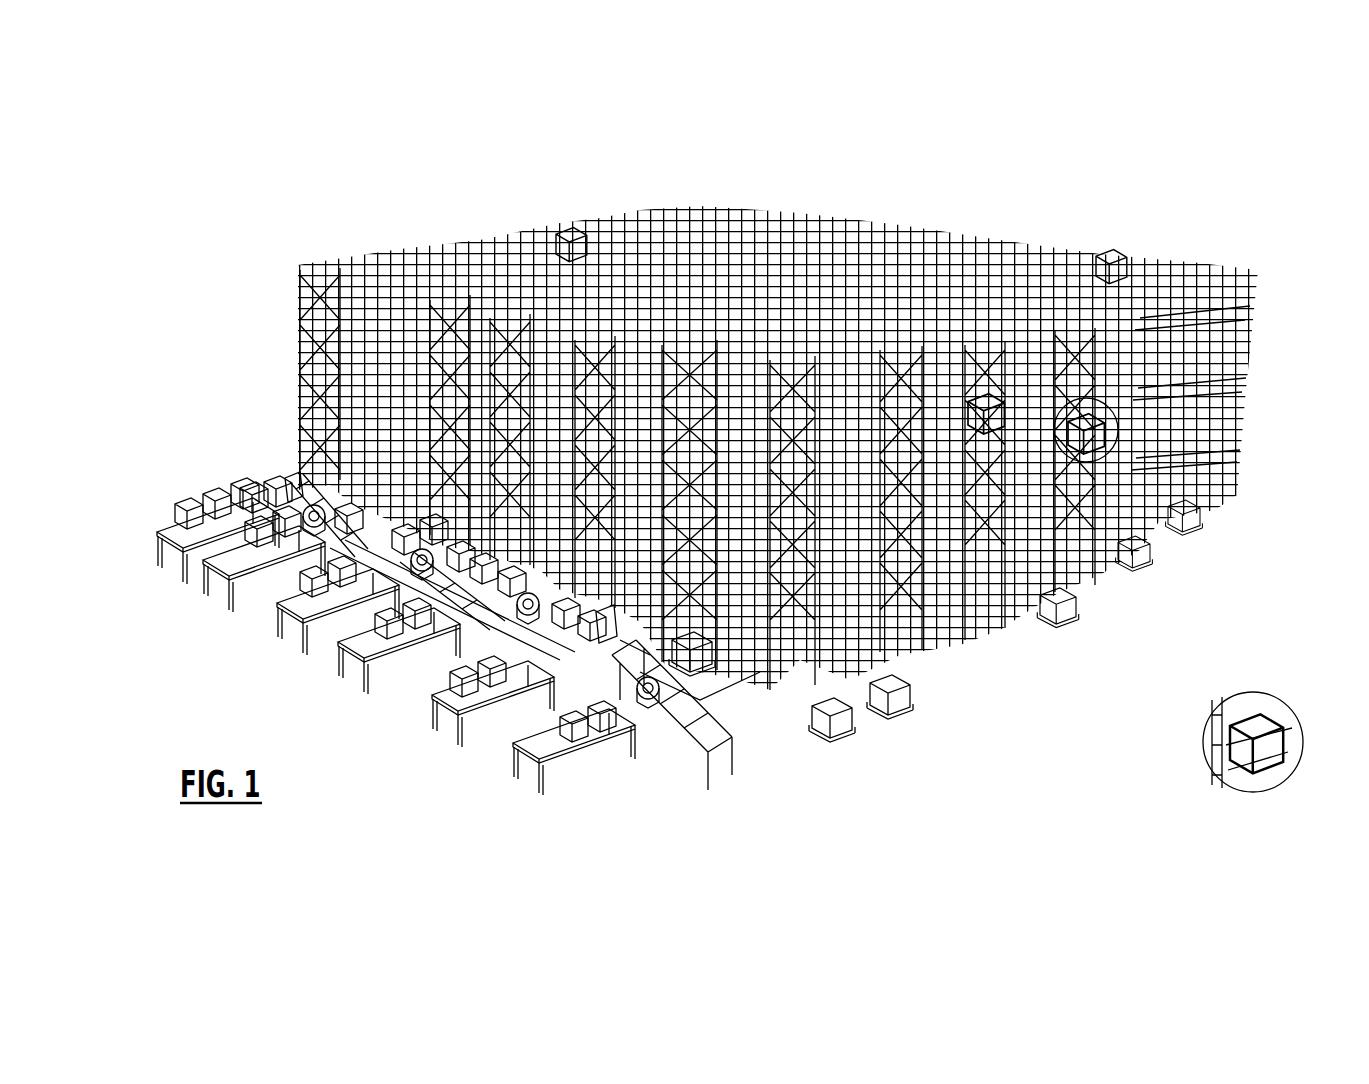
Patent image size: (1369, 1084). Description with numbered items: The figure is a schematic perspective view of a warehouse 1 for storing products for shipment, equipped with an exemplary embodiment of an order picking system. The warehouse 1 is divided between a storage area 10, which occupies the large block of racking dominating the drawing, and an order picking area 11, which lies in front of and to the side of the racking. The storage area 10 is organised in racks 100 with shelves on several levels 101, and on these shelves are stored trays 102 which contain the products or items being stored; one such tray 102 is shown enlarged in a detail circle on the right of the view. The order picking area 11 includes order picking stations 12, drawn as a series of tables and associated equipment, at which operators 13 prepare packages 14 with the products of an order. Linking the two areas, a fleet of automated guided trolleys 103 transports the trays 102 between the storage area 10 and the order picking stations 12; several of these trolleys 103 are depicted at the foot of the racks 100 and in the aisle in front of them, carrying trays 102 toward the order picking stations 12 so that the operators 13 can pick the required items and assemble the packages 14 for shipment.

The warehouse 1 is at (362, 185).
The storage area 10 is at (1095, 775).
The order picking area 11 is at (730, 848).
The order picking station 12 is at (395, 696).
The operator 13 is at (267, 492).
The package 14 is at (160, 530).
The rack 100 is at (301, 267).
The level 101 is at (302, 350).
The tray 102 is at (564, 234).
The automated guided trolley 103 is at (720, 666).